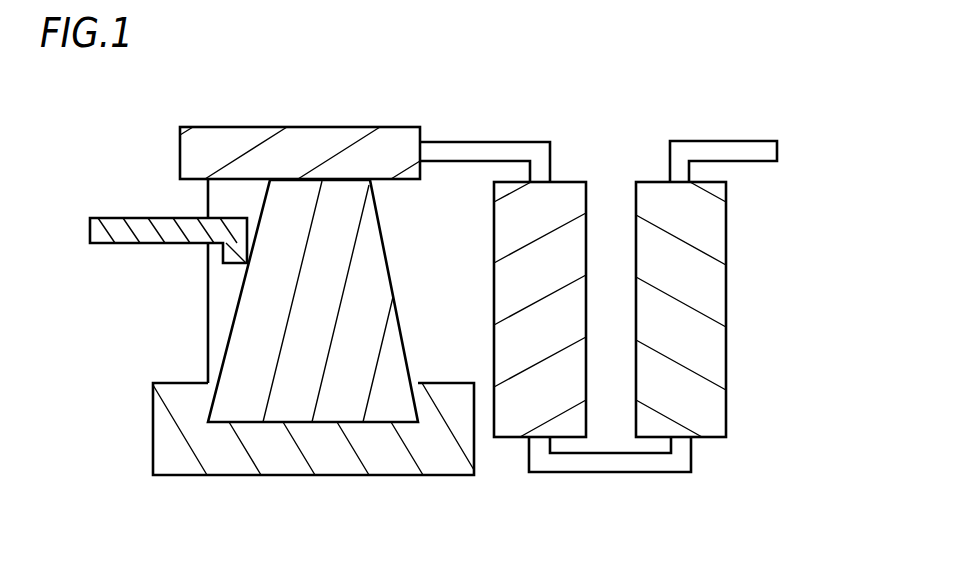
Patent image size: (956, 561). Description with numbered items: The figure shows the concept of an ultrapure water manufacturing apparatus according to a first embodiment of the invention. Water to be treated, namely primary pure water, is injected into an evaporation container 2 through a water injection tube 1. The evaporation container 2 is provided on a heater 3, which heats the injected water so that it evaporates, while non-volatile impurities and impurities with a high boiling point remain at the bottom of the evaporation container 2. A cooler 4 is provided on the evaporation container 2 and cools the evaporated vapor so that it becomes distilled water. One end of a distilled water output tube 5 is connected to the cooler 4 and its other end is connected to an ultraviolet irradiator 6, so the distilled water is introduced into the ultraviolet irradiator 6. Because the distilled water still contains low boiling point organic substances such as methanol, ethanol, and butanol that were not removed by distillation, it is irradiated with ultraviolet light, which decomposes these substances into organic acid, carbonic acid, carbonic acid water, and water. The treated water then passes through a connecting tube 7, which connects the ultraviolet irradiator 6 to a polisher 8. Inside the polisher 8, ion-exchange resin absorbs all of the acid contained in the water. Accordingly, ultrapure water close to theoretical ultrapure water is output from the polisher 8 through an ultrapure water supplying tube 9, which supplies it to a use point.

The water injection tube 1 is at (152, 244).
The evaporation container 2 is at (381, 243).
The heater 3 is at (290, 476).
The cooler 4 is at (340, 127).
The distilled water output tube 5 is at (460, 138).
The ultraviolet irradiator 6 is at (572, 180).
The connecting tube 7 is at (608, 473).
The polisher 8 is at (727, 294).
The ultrapure water supplying tube 9 is at (722, 140).